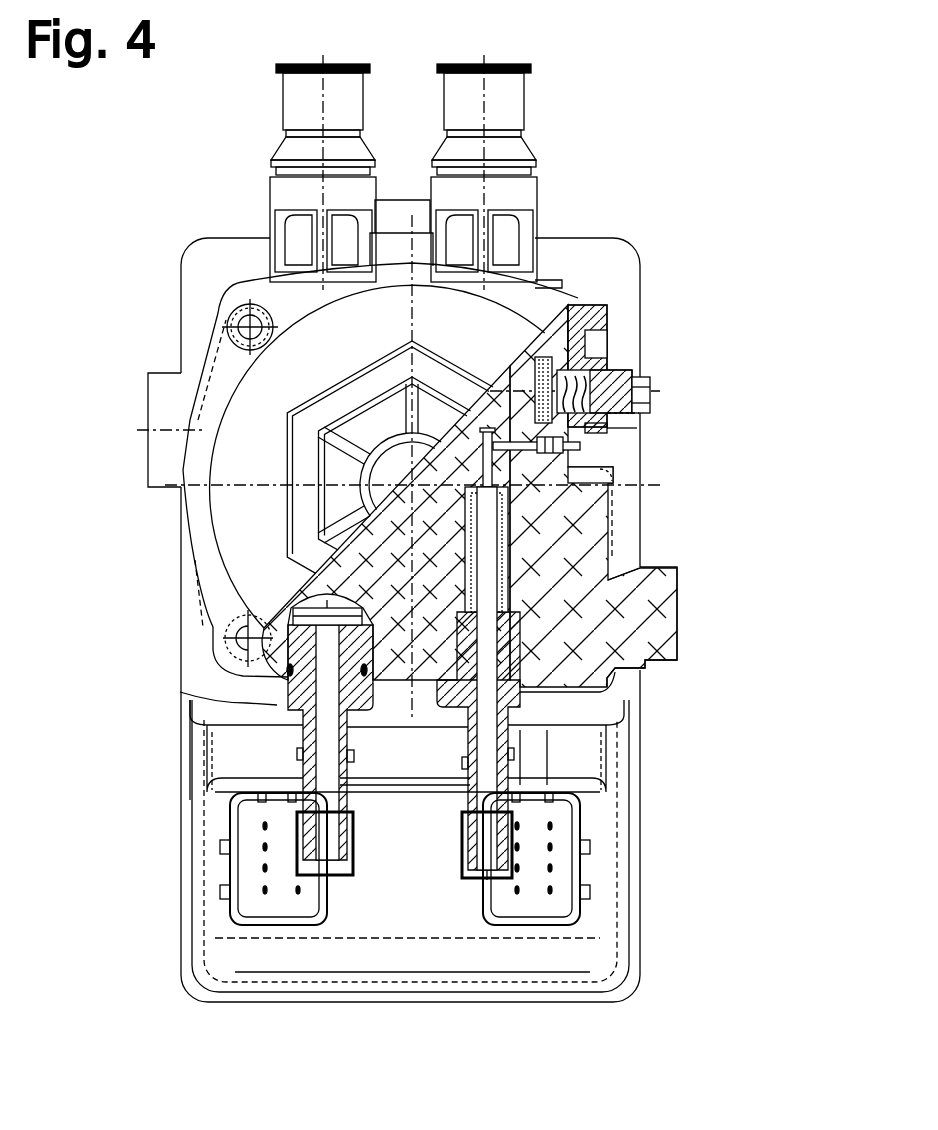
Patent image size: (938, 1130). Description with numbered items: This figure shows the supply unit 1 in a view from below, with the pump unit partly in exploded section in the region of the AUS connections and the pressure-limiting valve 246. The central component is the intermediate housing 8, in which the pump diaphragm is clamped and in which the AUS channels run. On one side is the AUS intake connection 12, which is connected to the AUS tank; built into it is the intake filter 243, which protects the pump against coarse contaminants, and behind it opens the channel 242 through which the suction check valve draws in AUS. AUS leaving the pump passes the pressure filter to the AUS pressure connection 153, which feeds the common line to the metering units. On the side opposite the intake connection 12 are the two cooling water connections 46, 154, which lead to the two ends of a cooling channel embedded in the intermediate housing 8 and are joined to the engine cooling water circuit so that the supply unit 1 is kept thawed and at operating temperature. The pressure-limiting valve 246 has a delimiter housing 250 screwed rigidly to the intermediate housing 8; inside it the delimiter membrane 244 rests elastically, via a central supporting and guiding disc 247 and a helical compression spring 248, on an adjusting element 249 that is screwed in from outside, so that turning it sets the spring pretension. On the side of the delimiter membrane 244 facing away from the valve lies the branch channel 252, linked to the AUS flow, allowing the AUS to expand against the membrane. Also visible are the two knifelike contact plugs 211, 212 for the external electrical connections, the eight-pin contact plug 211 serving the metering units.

The supply unit 1 is at (108, 619).
The intermediate housing 8 is at (568, 607).
The AUS intake connection 12 is at (540, 693).
The cooling water connection 46 is at (512, 153).
The AUS pressure connection 153 is at (183, 695).
The cooling water connection 154 is at (290, 150).
The contact plug 211 is at (270, 897).
The contact plug 212 is at (557, 900).
The channel 242 is at (517, 473).
The intake filter 243 is at (505, 540).
The delimiter membrane 244 is at (575, 383).
The pressure-limiting valve 246 is at (626, 334).
The supporting and guiding disc 247 is at (640, 292).
The helical compression spring 248 is at (593, 357).
The adjusting element 249 is at (652, 392).
The delimiter housing 250 is at (562, 445).
The branch channel 252 is at (512, 393).